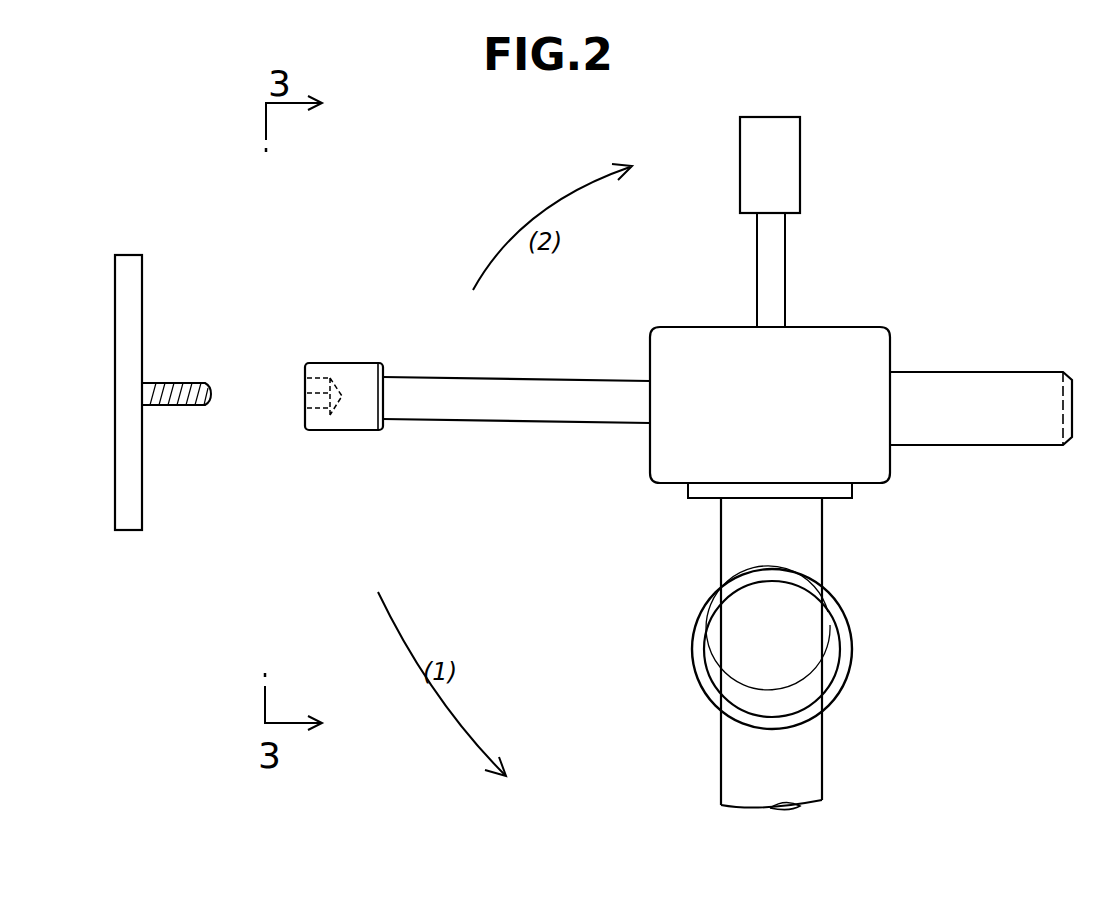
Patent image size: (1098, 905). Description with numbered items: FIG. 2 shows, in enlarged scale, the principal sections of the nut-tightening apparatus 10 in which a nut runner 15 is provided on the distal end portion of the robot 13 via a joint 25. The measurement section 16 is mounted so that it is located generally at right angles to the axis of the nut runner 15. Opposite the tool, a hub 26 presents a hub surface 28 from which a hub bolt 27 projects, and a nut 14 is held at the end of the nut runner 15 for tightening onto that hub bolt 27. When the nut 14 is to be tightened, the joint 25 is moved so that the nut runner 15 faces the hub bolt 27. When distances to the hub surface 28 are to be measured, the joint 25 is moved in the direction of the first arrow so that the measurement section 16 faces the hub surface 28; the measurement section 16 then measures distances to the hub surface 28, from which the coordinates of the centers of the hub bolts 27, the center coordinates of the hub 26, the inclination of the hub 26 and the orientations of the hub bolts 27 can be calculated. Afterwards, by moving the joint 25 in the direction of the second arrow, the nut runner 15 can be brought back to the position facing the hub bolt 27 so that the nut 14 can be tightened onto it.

The valve assembly 10 is at (967, 255).
The robot 13 is at (812, 752).
The nut 14 is at (305, 402).
The nut runner 15 is at (473, 414).
The measurement section 16 is at (793, 148).
The joint 25 is at (827, 641).
The hub 26 is at (124, 514).
The hub bolt 27 is at (203, 373).
The hub surface 28 is at (142, 500).